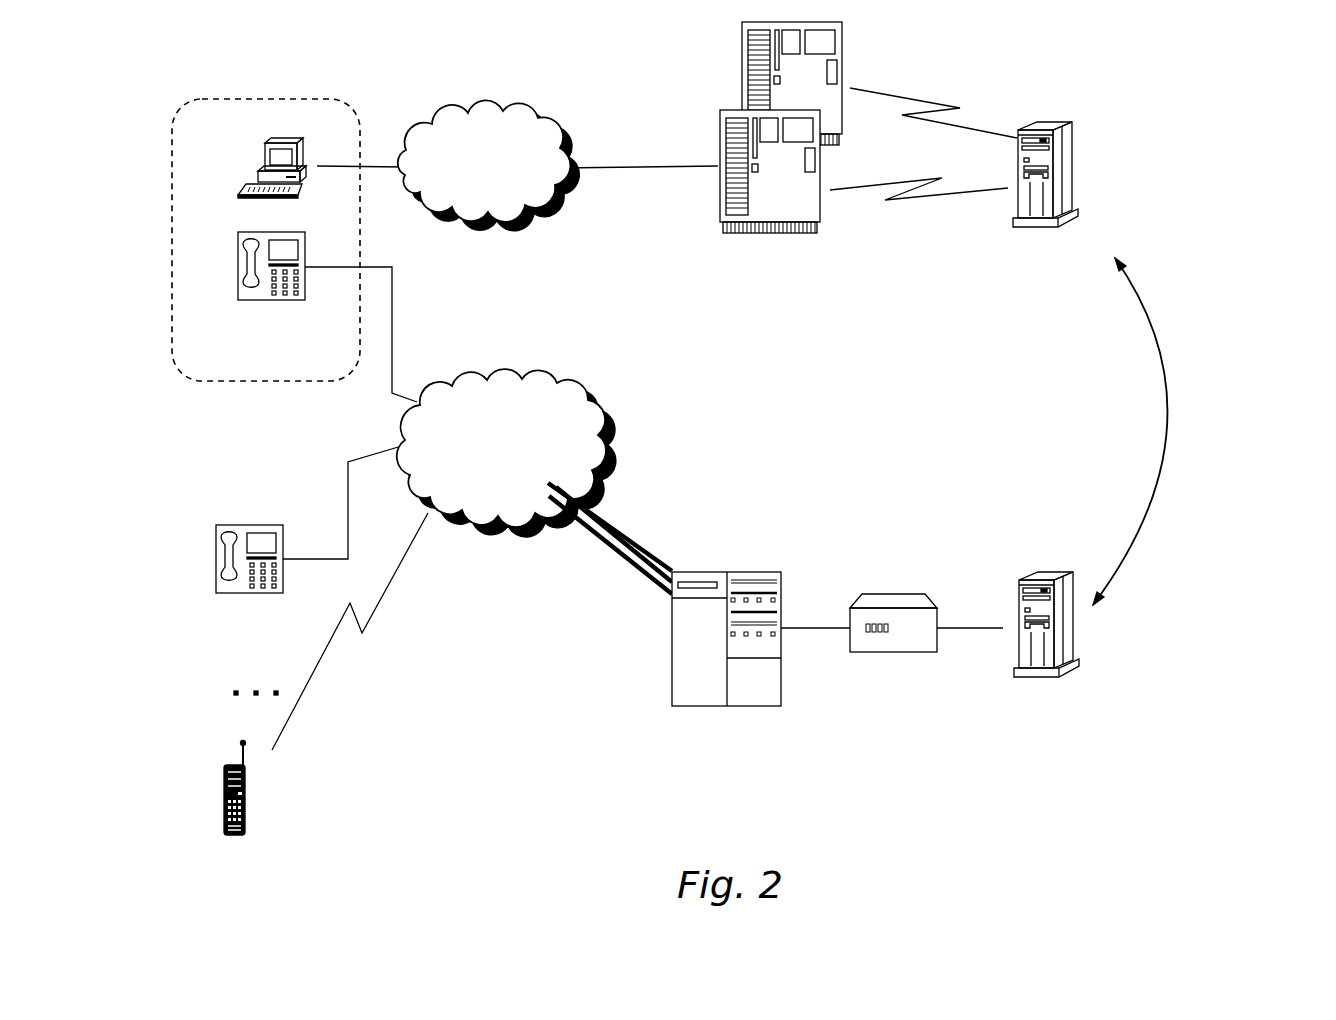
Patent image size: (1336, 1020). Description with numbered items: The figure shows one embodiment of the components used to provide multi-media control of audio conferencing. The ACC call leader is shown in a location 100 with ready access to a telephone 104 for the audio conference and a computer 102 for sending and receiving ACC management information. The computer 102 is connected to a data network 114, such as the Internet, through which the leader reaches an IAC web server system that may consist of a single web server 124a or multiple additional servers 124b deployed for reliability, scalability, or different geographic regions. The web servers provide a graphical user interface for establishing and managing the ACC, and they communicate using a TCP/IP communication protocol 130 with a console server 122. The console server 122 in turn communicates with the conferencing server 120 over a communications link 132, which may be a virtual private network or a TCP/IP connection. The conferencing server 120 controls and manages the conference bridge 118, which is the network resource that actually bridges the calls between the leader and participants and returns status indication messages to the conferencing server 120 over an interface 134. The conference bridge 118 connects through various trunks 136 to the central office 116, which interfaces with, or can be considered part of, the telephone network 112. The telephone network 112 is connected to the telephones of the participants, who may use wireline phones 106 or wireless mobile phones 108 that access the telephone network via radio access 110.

The location 100 is at (249, 98).
The computer 102 is at (263, 165).
The telephone 104 is at (238, 250).
The participant telephone 106 is at (239, 524).
The participant telephone 108 is at (228, 757).
The radio access 110 is at (382, 672).
The telephone network 112 is at (493, 380).
The data network 114 is at (451, 118).
The central office 116 is at (728, 572).
The conference bridge 118 is at (880, 594).
The conferencing server 120 is at (1017, 577).
The console server 122 is at (1072, 155).
The web server 124a is at (717, 145).
The additional web servers 124b is at (738, 90).
The TCP/IP communication protocol 130 is at (938, 100).
The communications link 132 is at (1158, 462).
The interface 134 is at (972, 628).
The trunks 136 is at (818, 628).